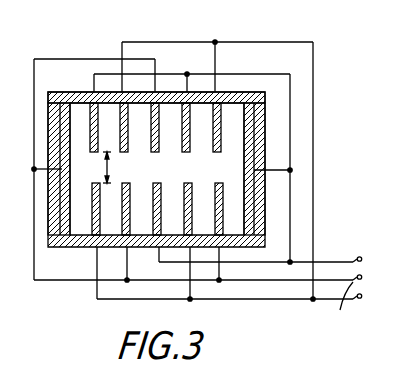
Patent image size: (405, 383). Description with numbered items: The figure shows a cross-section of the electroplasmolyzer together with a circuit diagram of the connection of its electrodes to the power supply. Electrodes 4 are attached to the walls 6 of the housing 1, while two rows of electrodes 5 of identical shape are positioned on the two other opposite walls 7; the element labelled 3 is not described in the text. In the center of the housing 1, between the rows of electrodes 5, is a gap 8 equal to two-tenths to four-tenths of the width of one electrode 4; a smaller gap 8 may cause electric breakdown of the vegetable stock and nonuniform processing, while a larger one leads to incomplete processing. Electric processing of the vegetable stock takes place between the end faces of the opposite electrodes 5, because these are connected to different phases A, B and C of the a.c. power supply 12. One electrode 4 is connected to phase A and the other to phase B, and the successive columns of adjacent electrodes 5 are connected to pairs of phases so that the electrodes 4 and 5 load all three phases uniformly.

The housing 1 is at (61, 91).
The right side wall 3 is at (246, 212).
The electrodes 4 is at (71, 99).
The electrodes 5 is at (153, 207).
The walls 6 is at (60, 133).
The walls 7 is at (175, 232).
The gap 8 is at (106, 167).
The a.c. power supply 12 is at (368, 255).